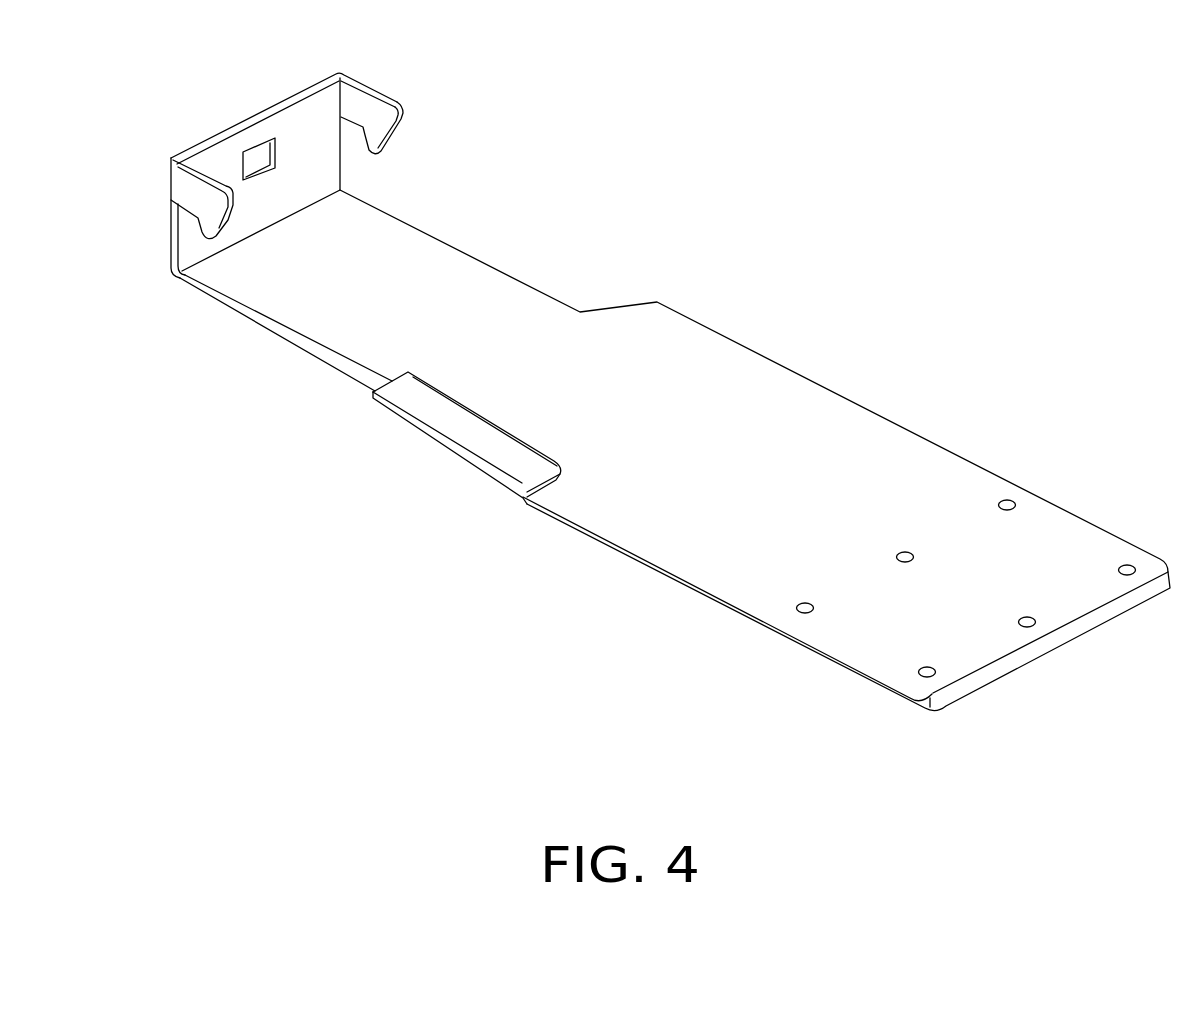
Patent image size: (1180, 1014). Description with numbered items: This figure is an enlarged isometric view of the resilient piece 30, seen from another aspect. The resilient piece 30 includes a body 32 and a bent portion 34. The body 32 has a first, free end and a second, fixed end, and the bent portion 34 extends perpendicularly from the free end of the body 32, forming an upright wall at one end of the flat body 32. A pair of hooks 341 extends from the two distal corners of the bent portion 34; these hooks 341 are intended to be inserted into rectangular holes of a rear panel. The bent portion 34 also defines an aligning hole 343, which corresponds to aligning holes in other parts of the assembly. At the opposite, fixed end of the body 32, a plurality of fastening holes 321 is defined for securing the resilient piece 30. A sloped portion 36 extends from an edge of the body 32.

The resilient piece 30 is at (659, 368).
The body 32 is at (675, 450).
The fastening holes 321 is at (1007, 503).
The bent portion 34 is at (321, 151).
The hooks 341 is at (360, 102).
The aligning hole 343 is at (257, 157).
The sloped portion 36 is at (470, 432).